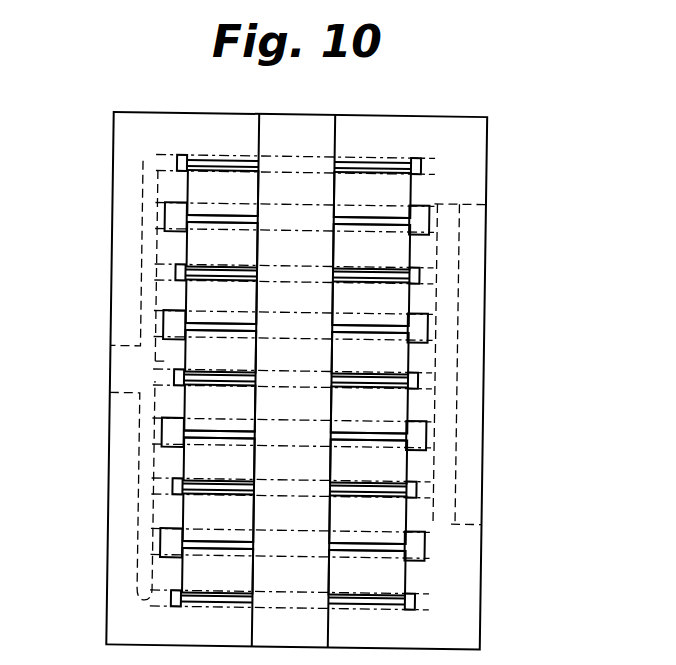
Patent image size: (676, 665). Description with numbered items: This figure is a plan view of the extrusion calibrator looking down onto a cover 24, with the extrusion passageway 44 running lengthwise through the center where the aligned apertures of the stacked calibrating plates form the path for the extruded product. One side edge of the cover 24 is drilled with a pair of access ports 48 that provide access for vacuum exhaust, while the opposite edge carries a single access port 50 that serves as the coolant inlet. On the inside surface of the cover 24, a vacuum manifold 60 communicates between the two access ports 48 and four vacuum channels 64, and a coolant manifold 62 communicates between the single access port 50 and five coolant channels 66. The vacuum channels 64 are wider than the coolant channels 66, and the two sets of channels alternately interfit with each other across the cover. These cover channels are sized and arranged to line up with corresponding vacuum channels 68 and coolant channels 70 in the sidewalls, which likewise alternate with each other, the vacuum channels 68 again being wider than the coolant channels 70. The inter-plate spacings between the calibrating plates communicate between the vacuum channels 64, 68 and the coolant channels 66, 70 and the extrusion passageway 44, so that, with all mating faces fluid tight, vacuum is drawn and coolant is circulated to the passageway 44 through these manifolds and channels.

The cover 24 is at (453, 116).
The extrusion passageway 44 is at (297, 113).
The access ports 48 is at (480, 220).
The access port 50 is at (110, 366).
The vacuum manifold 60 is at (445, 343).
The coolant manifold 62 is at (136, 477).
The vacuum channels 64 is at (392, 325).
The coolant channels 66 is at (197, 267).
The vacuum channels 68 is at (430, 210).
The coolant channels 70 is at (178, 162).